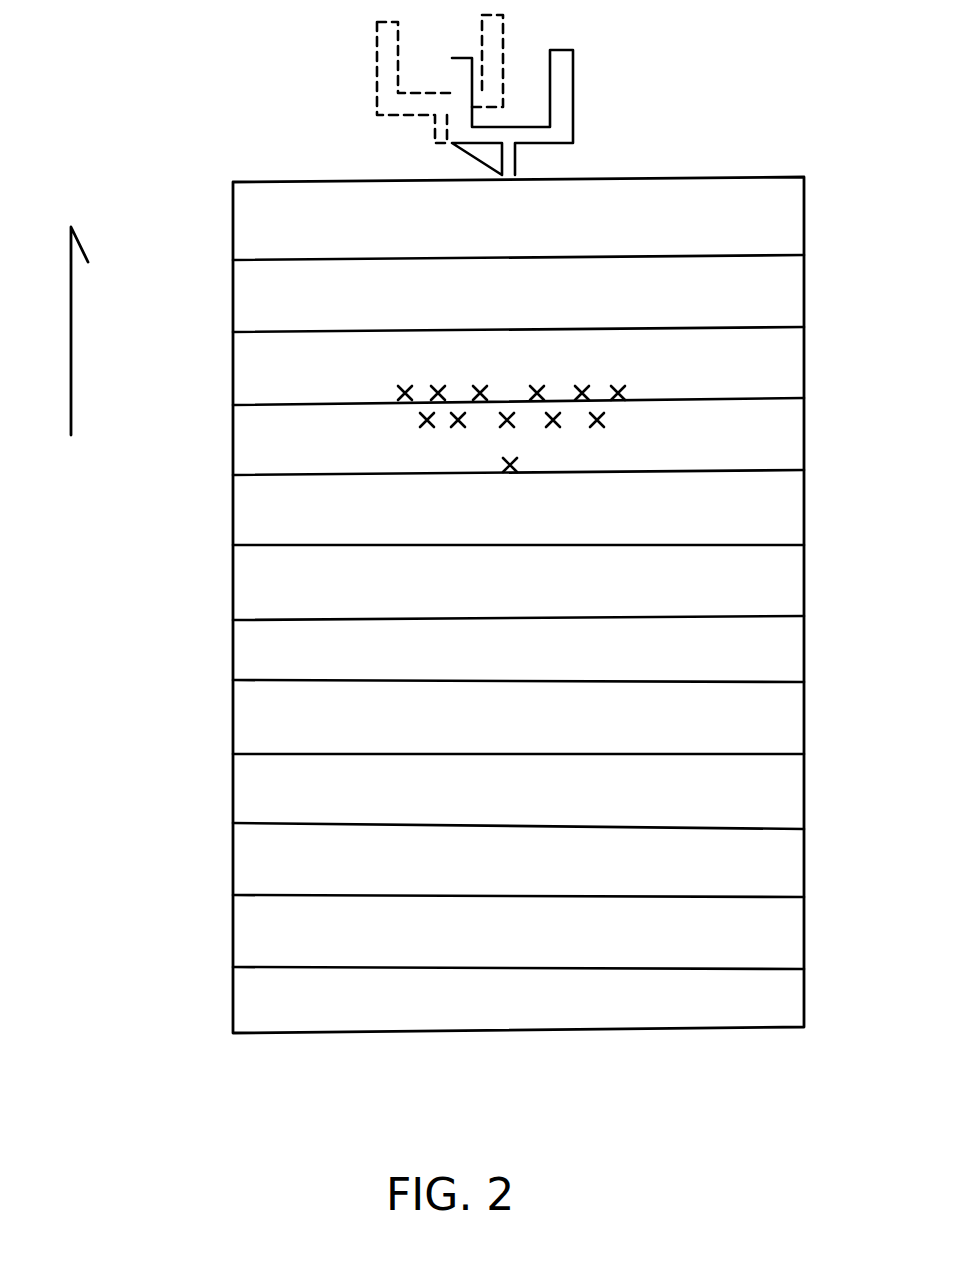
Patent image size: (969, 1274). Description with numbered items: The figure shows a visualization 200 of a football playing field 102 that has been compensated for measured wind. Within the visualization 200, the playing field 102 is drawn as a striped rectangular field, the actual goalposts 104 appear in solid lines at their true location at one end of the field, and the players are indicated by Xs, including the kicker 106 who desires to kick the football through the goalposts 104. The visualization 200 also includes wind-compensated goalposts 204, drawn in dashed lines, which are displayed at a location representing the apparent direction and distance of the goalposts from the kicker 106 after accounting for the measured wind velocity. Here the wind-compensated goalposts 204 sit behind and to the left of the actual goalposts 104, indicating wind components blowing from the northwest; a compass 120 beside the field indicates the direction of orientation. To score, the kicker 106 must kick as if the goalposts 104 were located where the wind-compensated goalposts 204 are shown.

The visualization 200 is at (200, 775).
The playing field 102 is at (526, 878).
The goalposts 104 is at (563, 115).
The wind-compensated goalposts 204 is at (376, 64).
The kicker 106 is at (512, 478).
The compass 120 is at (85, 345).